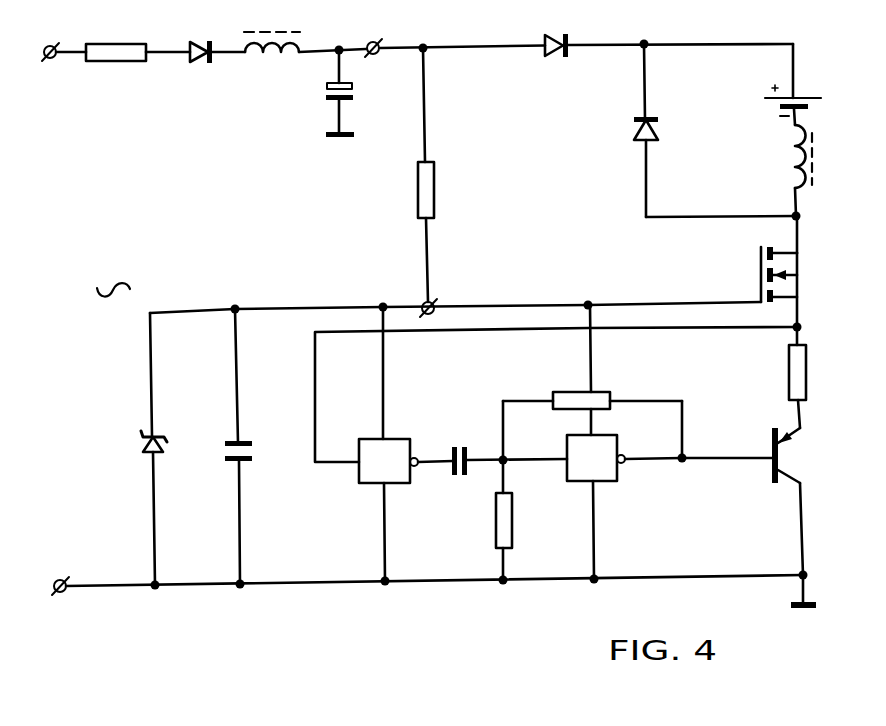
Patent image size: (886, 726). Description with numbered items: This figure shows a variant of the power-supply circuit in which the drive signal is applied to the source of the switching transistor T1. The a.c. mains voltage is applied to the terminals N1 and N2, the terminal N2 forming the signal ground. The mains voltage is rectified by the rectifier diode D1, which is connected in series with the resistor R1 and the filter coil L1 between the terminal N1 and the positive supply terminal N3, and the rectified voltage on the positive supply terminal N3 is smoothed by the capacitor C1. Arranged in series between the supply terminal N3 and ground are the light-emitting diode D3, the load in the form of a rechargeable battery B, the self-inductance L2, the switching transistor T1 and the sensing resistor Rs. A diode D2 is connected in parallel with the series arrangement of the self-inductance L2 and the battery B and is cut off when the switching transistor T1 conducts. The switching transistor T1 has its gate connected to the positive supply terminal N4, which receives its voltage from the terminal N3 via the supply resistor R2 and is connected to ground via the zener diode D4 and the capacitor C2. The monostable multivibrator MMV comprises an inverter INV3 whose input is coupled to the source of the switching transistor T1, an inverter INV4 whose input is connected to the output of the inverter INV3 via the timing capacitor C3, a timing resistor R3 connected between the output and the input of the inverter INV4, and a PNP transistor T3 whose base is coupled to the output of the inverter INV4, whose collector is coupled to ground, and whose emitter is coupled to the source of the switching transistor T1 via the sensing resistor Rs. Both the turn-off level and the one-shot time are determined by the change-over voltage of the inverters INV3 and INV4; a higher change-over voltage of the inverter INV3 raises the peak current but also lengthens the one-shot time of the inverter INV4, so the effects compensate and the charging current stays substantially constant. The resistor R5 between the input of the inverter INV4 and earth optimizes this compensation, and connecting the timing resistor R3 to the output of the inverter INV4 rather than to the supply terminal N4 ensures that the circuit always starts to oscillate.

The terminal N1 is at (52, 33).
The resistor R1 is at (116, 33).
The rectifier diode D1 is at (198, 34).
The filter coil L1 is at (272, 28).
The positive supply terminal N3 is at (377, 29).
The capacitor C1 is at (358, 93).
The supply resistor R2 is at (442, 175).
The positive supply terminal N4 is at (444, 295).
The light-emitting diode D3 is at (526, 29).
The diode D2 is at (699, 130).
The rechargeable battery B is at (793, 84).
The self-inductance L2 is at (817, 170).
The switching transistor T1 is at (794, 271).
The sensing resistor Rs is at (810, 377).
The PNP transistor T3 is at (753, 518).
The terminal N2 is at (62, 569).
The zener diode D4 is at (139, 449).
The capacitor C2 is at (253, 446).
The monostable multivibrator MMV is at (536, 443).
The inverter INV3 is at (398, 444).
The timing capacitor C3 is at (492, 445).
The resistor R5 is at (519, 490).
The timing resistor R3 is at (592, 381).
The inverter INV4 is at (624, 494).